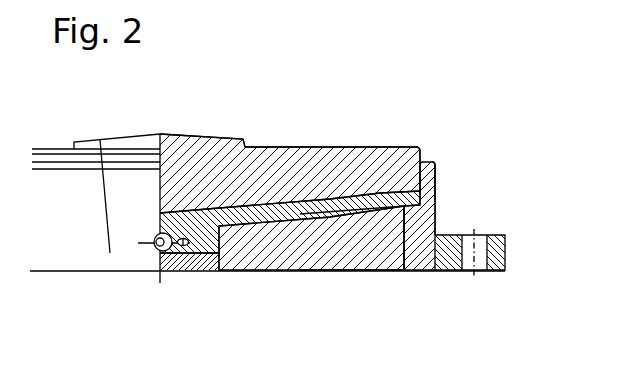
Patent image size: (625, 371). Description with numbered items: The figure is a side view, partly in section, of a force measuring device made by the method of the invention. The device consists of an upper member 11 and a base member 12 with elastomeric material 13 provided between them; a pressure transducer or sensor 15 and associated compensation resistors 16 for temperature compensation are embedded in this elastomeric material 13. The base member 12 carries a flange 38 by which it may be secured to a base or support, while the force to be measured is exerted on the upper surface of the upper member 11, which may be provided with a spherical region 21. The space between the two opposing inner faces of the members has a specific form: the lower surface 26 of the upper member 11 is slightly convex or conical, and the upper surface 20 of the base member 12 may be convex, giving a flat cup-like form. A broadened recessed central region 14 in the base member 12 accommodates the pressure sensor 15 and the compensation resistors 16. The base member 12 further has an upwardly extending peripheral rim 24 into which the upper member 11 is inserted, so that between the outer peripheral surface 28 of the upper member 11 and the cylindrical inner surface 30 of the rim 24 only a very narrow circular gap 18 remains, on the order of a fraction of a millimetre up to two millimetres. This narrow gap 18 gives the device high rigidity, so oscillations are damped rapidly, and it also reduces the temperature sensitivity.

The spherical region 21 is at (232, 137).
The lower surface 26 is at (362, 198).
The outer peripheral surface 28 is at (380, 147).
The upper member 11 is at (412, 147).
The circular gap 18 is at (427, 162).
The peripheral rim 24 is at (437, 178).
The cylindrical inner surface 30 is at (437, 195).
The pressure sensor 15 is at (153, 258).
The compensation resistors 16 is at (180, 265).
The recessed central region 14 is at (222, 224).
The upper surface 20 is at (277, 228).
The base member 12 is at (353, 237).
The elastomeric material 13 is at (400, 258).
The flange 38 is at (452, 250).